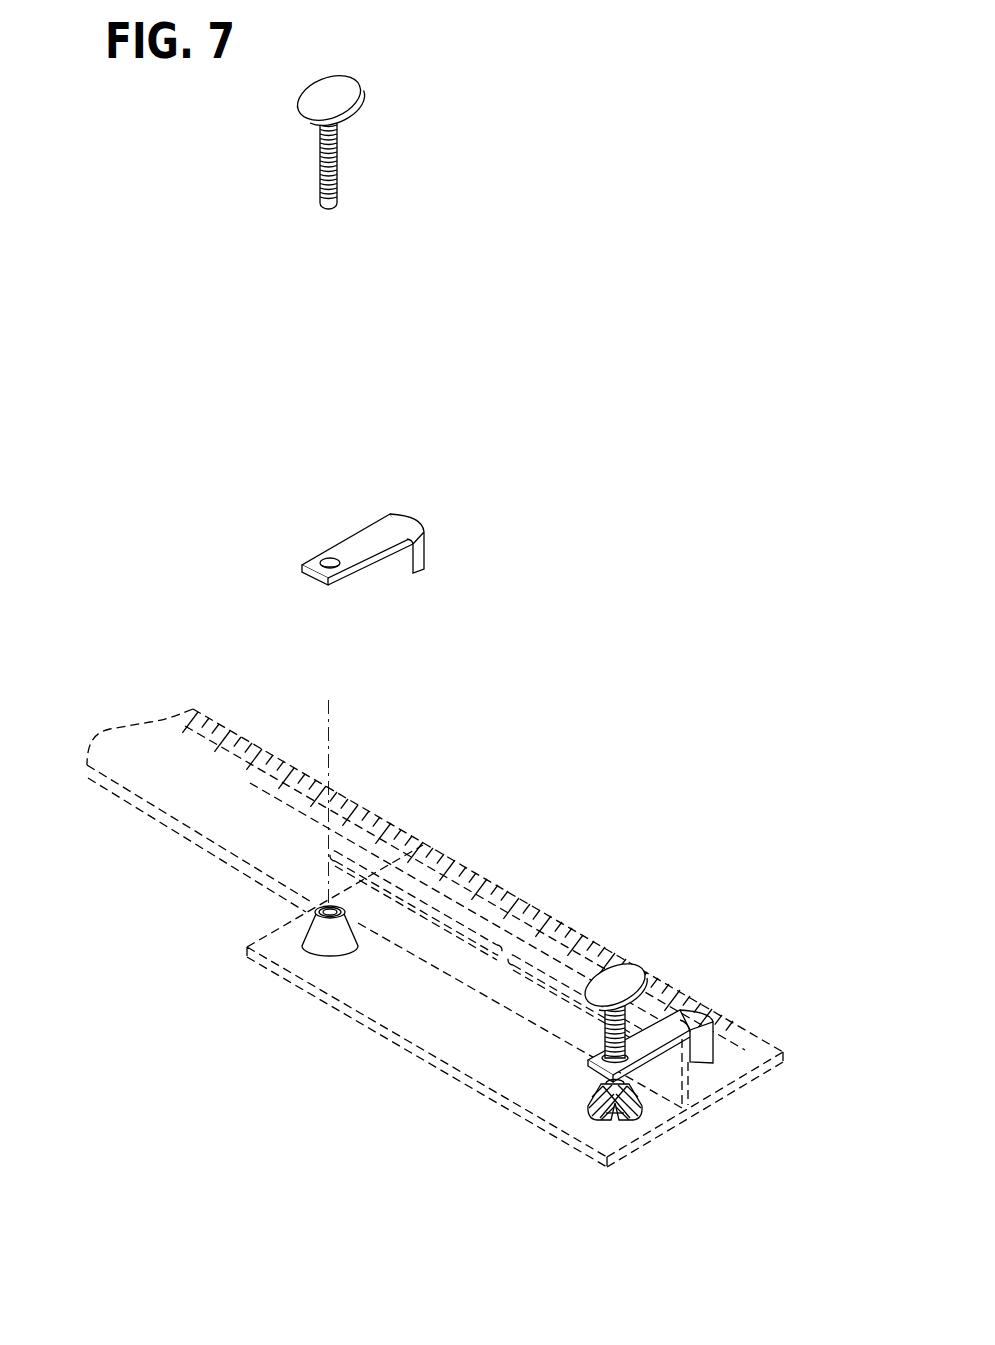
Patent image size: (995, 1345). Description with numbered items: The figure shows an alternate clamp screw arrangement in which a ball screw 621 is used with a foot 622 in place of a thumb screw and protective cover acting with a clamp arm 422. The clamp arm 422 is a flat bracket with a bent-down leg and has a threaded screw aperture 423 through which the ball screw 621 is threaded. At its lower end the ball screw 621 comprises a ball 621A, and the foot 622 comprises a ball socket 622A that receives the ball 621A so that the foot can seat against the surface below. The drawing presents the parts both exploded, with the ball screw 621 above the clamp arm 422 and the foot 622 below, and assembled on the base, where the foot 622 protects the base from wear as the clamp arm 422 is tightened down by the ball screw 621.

The ball screw 621 is at (330, 93).
The ball 621A is at (336, 207).
The clamp arm 422 is at (388, 528).
The threaded screw aperture 423 is at (323, 553).
The foot 622 is at (317, 917).
The ball socket 622A is at (333, 905).